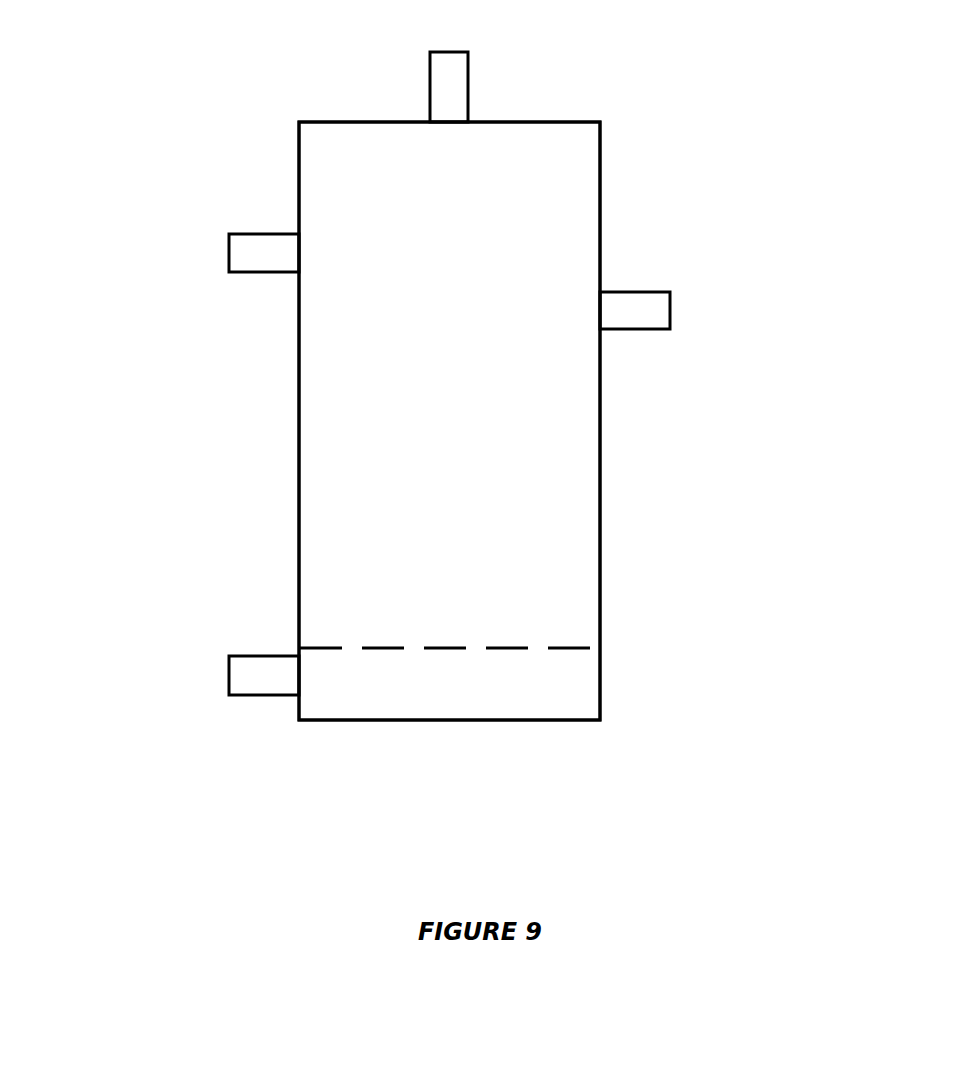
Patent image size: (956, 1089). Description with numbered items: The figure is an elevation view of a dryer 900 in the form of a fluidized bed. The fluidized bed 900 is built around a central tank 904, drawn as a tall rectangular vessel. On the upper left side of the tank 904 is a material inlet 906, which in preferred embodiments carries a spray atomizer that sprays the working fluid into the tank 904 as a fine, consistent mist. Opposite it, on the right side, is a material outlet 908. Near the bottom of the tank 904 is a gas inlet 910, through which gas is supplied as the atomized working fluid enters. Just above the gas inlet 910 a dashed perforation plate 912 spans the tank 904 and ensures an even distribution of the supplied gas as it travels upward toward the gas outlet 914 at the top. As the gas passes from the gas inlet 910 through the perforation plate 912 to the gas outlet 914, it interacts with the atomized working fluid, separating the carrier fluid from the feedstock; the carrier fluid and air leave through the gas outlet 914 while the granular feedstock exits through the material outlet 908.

The dryer 900 is at (272, 88).
The central tank 904 is at (299, 448).
The material inlet 906 is at (229, 251).
The material outlet 908 is at (670, 308).
The gas inlet 910 is at (229, 674).
The perforation plate 912 is at (565, 645).
The gas outlet 914 is at (468, 90).